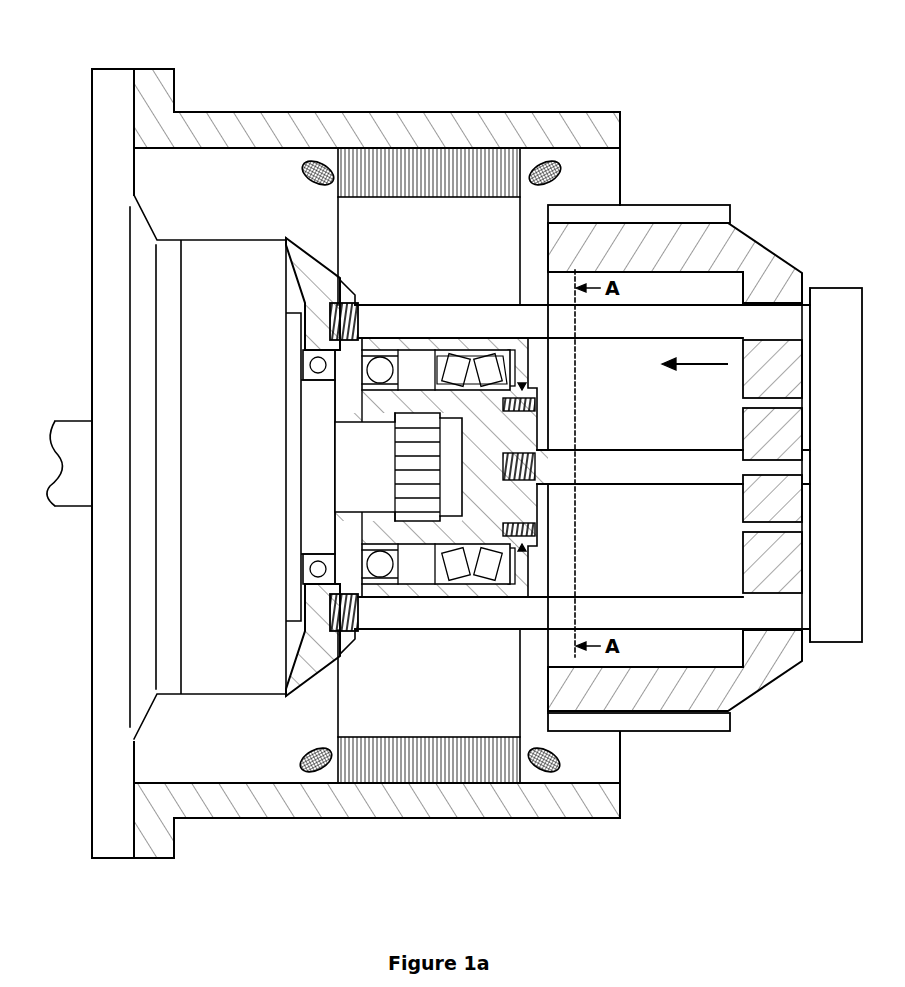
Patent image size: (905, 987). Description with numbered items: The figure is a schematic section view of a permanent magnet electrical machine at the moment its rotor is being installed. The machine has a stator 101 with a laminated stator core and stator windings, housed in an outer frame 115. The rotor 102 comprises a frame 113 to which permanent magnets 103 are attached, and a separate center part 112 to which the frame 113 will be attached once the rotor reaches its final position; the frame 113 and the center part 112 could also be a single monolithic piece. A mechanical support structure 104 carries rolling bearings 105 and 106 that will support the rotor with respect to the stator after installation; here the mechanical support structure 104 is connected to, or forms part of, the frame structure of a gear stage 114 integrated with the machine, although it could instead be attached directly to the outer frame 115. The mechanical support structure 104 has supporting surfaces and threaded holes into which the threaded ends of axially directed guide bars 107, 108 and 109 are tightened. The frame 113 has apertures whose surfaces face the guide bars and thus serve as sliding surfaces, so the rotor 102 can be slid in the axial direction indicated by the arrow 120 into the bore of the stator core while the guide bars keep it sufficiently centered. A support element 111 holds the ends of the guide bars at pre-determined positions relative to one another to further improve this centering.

The stator 101 is at (336, 163).
The rotor 102 is at (757, 237).
The permanent magnets 103 is at (672, 205).
The mechanical support structure 104 is at (307, 250).
The bearing 105 is at (398, 556).
The bearing 106 is at (475, 575).
The guide bar 107 is at (425, 305).
The guide bar 108 is at (710, 485).
The guide bar 109 is at (380, 617).
The support element 111 is at (826, 288).
The center part 112 is at (441, 467).
The frame 113 is at (675, 263).
The gear stage 114 is at (232, 238).
The outer frame 115 is at (427, 112).
The arrow 120 is at (697, 372).